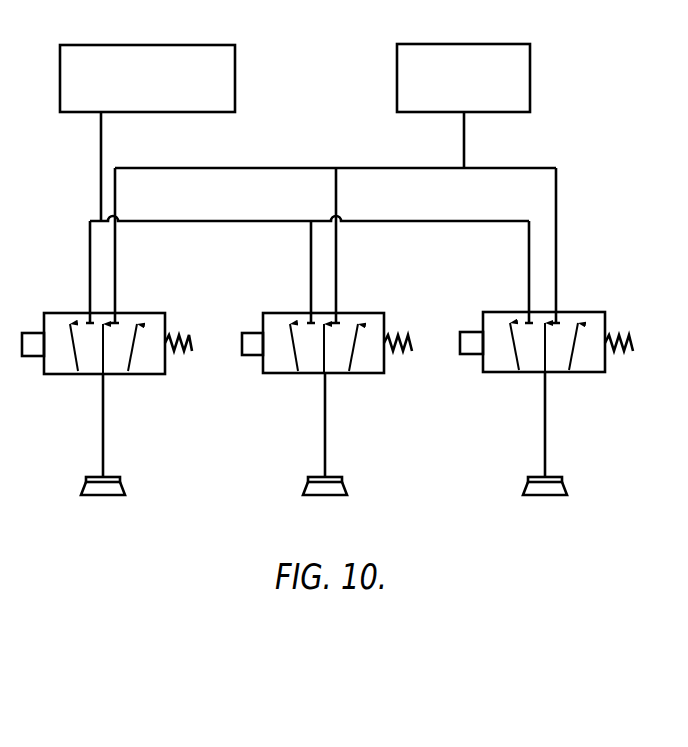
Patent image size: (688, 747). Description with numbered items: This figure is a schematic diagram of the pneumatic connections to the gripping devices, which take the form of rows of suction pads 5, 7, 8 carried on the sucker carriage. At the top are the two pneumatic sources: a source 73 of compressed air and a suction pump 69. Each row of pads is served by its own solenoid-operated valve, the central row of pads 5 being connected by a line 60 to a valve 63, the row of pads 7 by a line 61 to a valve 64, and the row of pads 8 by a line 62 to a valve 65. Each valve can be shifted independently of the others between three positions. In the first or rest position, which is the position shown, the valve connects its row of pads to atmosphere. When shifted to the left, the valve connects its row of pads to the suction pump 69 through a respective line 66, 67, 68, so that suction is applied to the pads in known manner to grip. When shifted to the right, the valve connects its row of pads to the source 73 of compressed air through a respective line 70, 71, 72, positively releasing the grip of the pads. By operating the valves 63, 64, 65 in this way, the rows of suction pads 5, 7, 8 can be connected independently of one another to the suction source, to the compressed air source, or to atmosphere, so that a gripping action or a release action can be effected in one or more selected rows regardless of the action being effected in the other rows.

The source of compressed air 73 is at (235, 68).
The suction pump 69 is at (530, 68).
The line 71 is at (89, 257).
The line 67 is at (117, 262).
The line 70 is at (310, 255).
The line 66 is at (337, 277).
The line 72 is at (528, 253).
The line 68 is at (557, 262).
The solenoid-operated valve 64 is at (157, 312).
The solenoid-operated valve 63 is at (383, 292).
The solenoid-operated valve 65 is at (602, 292).
The line 61 is at (104, 419).
The line 60 is at (326, 421).
The line 62 is at (546, 421).
The suction pads 7 is at (124, 489).
The suction pads 5 is at (344, 488).
The suction pads 8 is at (526, 485).